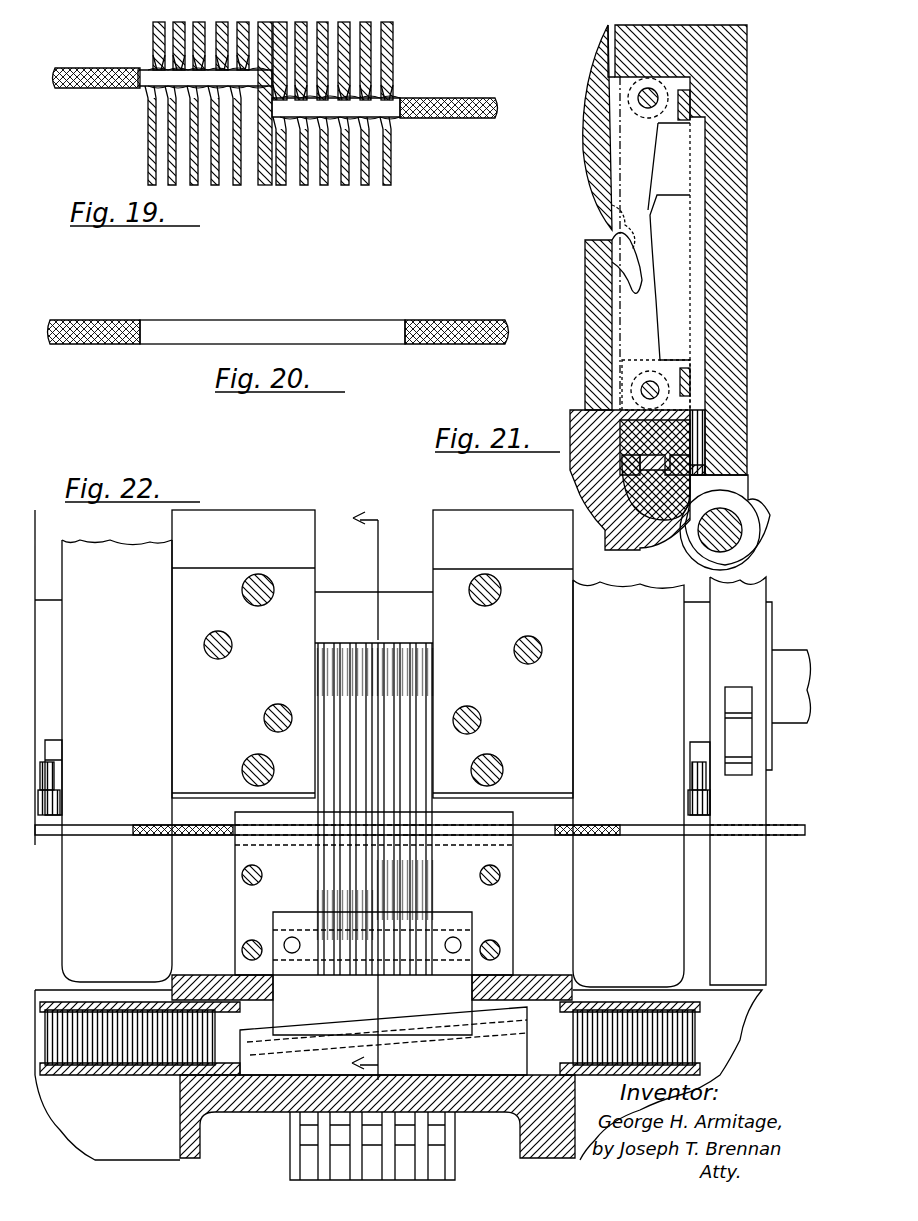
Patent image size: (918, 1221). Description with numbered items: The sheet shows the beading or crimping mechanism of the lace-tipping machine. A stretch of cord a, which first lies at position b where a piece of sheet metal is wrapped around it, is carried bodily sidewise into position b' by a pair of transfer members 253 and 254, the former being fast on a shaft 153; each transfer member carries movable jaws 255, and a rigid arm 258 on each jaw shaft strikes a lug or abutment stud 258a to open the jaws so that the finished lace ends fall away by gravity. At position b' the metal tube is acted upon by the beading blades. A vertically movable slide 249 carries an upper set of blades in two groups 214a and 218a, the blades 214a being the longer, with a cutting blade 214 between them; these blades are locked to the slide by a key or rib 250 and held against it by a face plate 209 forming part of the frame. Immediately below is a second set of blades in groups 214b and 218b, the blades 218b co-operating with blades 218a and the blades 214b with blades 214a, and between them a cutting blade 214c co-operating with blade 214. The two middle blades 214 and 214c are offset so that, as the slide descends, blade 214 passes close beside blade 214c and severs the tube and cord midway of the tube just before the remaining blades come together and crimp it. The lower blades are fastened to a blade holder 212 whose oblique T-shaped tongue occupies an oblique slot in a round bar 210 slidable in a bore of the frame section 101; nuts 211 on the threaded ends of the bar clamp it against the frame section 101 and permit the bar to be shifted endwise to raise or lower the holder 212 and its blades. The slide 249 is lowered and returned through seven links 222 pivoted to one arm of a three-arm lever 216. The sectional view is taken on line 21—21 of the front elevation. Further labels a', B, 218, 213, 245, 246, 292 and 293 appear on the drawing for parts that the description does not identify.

In FIG. 19, the position b is at (274, 115).
In FIG. 19, the weft binding band a' is at (273, 97).
In FIG. 19, the beading blades 218a is at (195, 58).
In FIG. 21, the beading blades 218a is at (622, 212).
In FIG. 22, the beading blades 218a is at (336, 676).
In FIG. 19, the cutting blade 214 is at (300, 28).
In FIG. 21, the cutting blade 214 is at (655, 243).
In FIG. 22, the cutting blade 214 is at (372, 645).
In FIG. 19, the beading blades 214b is at (290, 70).
In FIG. 22, the beading blades 214b is at (395, 906).
In FIG. 19, the cutting blade 214c is at (210, 158).
In FIG. 21, the cutting blade 214c is at (640, 318).
In FIG. 22, the cutting blade 214c is at (360, 978).
In FIG. 19, the beading blades 214a is at (262, 155).
In FIG. 22, the beading blades 214a is at (415, 688).
In FIG. 19, the warp threads 218 is at (385, 185).
In FIG. 20, the stretch of cord a is at (272, 316).
In FIG. 22, the stretch of cord a is at (437, 771).
In FIG. 20, the woven band B is at (452, 325).
In FIG. 22, the woven band B is at (615, 828).
In FIG. 21, the slide 249 is at (748, 258).
In FIG. 22, the slide 249 is at (420, 618).
In FIG. 21, the face plate 209 is at (590, 143).
In FIG. 21, the key or rib 250 is at (692, 98).
In FIG. 21, the position b' is at (593, 262).
In FIG. 21, the beading blades 218b is at (628, 283).
In FIG. 22, the beading blades 218b is at (365, 896).
In FIG. 21, the lower pivot pin 213 is at (692, 385).
In FIG. 21, the frame section 101 is at (580, 480).
In FIG. 22, the frame section 101 is at (745, 985).
In FIG. 21, the blade holder 212 is at (625, 430).
In FIG. 22, the blade holder 212 is at (372, 973).
In FIG. 21, the round bar 210 is at (690, 490).
In FIG. 22, the round bar 210 is at (383, 1041).
In FIG. 22, the left guide block 245 is at (243, 654).
In FIG. 22, the right guide block 246 is at (503, 654).
In FIG. 22, the section line 21 is at (380, 784).
In FIG. 22, the transfer member 254 is at (40, 698).
In FIG. 22, the left plate 293 is at (104, 944).
In FIG. 22, the rigid arm 258 is at (63, 748).
In FIG. 22, the lug 258a is at (56, 772).
In FIG. 22, the right plate 292 is at (628, 783).
In FIG. 22, the transfer member 253 is at (728, 781).
In FIG. 22, the shaft 153 is at (791, 686).
In FIG. 22, the movable jaw 255 is at (727, 722).
In FIG. 22, the nuts 211 is at (82, 1014).
In FIG. 22, the three-arm lever 216 is at (330, 1165).
In FIG. 22, the links 222 is at (440, 1140).